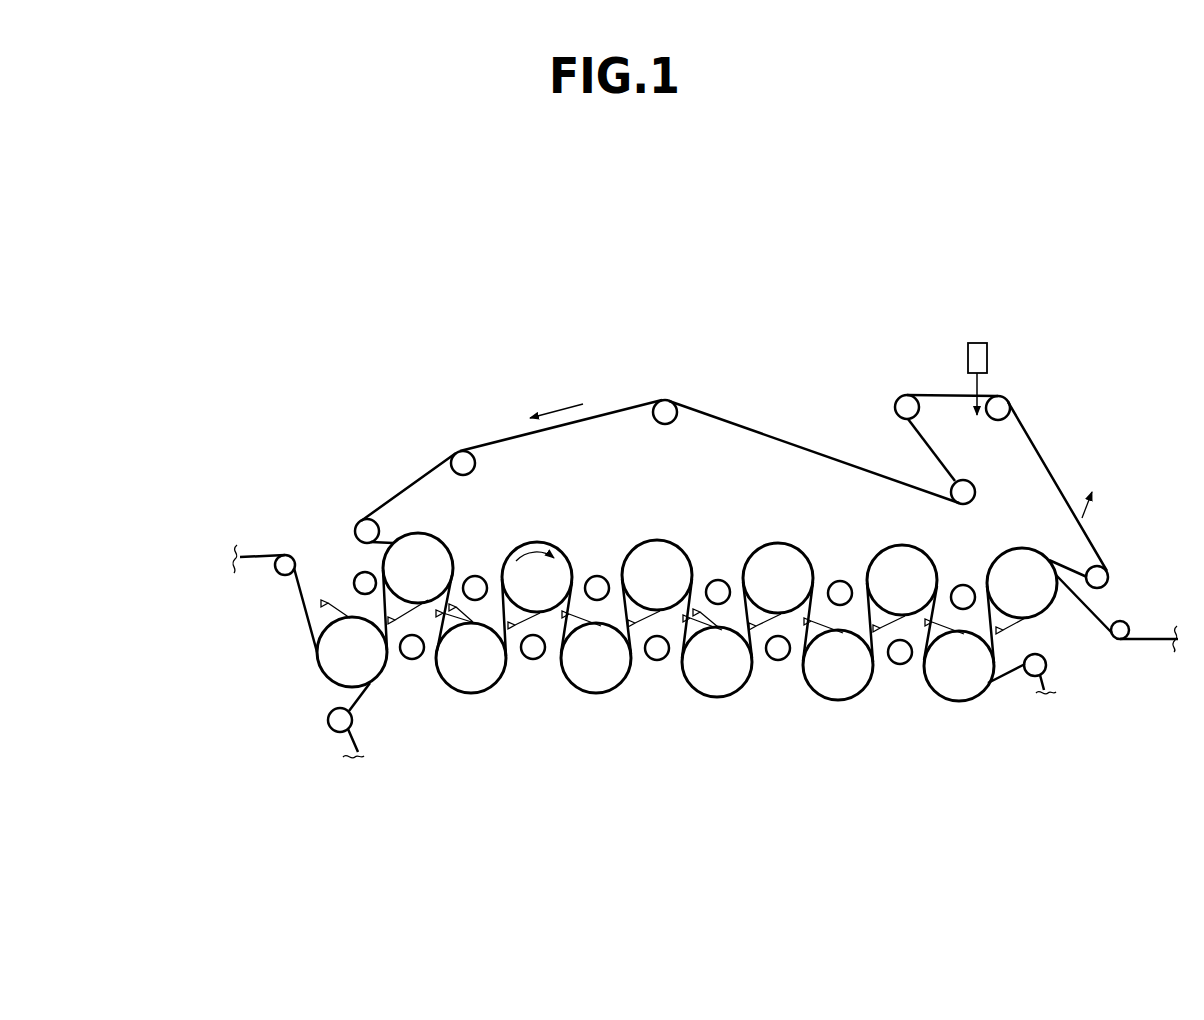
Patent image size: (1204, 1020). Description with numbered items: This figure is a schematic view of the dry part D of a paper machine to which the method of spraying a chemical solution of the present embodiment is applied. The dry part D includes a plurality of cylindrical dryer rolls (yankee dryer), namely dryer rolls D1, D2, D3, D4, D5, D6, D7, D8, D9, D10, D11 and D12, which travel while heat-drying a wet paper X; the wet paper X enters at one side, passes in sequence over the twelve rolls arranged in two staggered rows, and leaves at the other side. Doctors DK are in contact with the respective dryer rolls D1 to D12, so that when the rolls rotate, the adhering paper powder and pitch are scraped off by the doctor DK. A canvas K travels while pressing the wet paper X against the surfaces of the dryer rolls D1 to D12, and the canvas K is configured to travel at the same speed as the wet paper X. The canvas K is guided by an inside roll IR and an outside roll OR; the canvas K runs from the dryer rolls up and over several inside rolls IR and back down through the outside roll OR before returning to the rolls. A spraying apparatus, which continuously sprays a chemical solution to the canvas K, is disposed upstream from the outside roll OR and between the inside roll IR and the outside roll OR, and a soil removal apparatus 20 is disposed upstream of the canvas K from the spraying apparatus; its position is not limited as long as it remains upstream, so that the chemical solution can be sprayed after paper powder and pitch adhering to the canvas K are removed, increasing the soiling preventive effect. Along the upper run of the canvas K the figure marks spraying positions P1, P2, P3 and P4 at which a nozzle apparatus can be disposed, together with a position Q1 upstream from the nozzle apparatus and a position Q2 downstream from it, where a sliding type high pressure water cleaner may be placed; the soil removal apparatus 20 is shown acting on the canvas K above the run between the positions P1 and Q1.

The dry part D is at (1032, 297).
The dryer roll D1 is at (333, 667).
The dryer roll D2 is at (399, 583).
The dryer roll D3 is at (452, 673).
The dryer roll D4 is at (518, 592).
The dryer roll D5 is at (577, 673).
The dryer roll D6 is at (638, 590).
The dryer roll D7 is at (698, 677).
The dryer roll D8 is at (759, 593).
The dryer roll D9 is at (819, 680).
The dryer roll D10 is at (877, 595).
The dryer roll D11 is at (934, 681).
The dryer roll D12 is at (997, 598).
The doctor DK is at (331, 600).
The inside roll IR is at (458, 452).
The outside roll OR is at (967, 487).
The position Q1 is at (989, 393).
The position Q2 is at (622, 410).
The spraying position P1 is at (928, 393).
The spraying position P2 is at (898, 394).
The spraying position P3 is at (903, 425).
The spraying position P4 is at (935, 456).
The canvas K is at (1052, 468).
The wet paper X is at (1105, 620).
The soil removal apparatus 20 is at (968, 345).